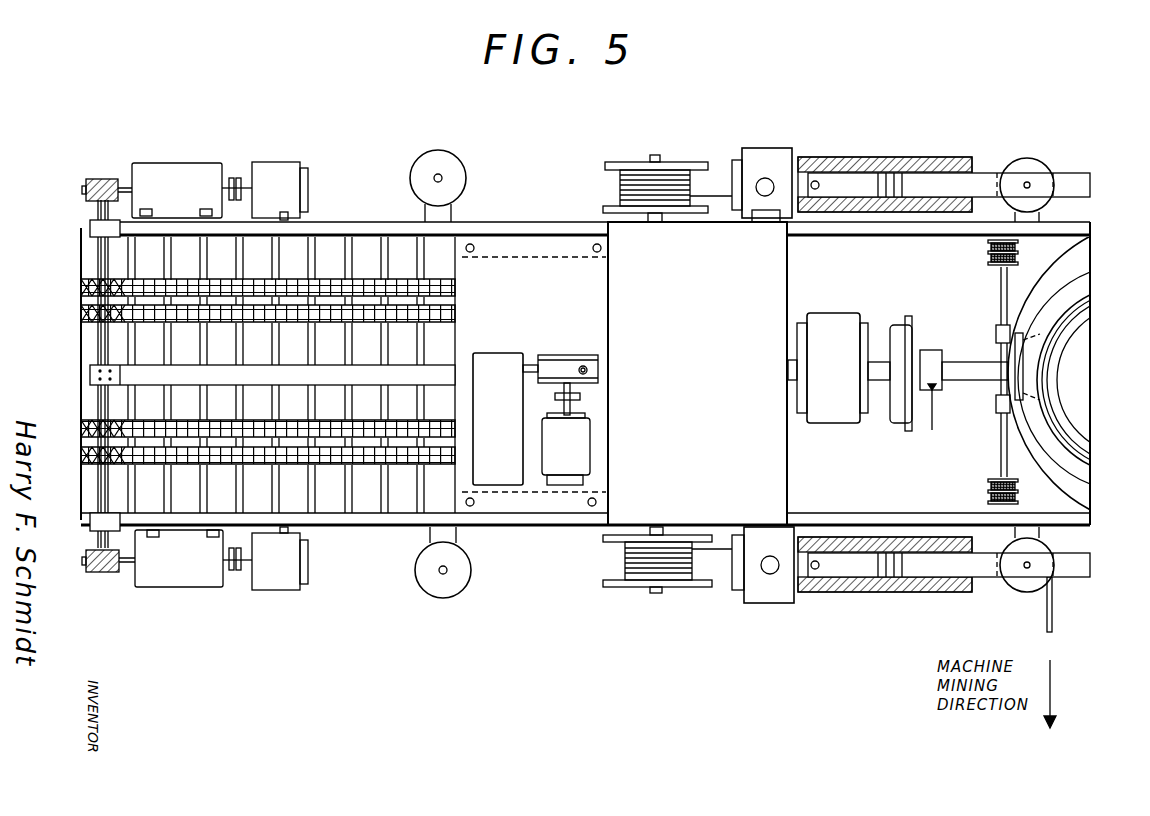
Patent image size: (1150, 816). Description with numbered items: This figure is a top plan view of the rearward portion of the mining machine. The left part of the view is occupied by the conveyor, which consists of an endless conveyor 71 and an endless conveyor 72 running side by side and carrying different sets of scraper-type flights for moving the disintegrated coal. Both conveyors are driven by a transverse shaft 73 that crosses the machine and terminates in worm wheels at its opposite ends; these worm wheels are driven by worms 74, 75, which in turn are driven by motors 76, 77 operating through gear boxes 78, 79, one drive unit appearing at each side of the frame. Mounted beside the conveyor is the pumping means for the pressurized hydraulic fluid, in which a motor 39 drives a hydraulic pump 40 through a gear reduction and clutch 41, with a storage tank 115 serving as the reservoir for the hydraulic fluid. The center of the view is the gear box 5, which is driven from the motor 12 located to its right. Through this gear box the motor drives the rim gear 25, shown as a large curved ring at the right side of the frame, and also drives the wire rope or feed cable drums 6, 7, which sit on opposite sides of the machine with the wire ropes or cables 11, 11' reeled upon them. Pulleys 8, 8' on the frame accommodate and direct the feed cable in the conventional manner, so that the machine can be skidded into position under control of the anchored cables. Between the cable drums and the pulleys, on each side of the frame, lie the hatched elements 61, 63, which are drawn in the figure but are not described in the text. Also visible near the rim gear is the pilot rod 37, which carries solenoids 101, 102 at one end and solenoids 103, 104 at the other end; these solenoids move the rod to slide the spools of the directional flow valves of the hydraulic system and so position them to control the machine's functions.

The gear box 5 is at (720, 348).
The feed cable drum 6 is at (617, 585).
The feed cable drum 7 is at (620, 162).
The pulley 8 is at (1031, 373).
The pulley 8' is at (447, 384).
The wire rope 11 is at (866, 599).
The wire rope 11' is at (697, 155).
The motor 12 is at (842, 320).
The rim gear 25 is at (1077, 288).
The pilot rod 37 is at (1002, 438).
The motor 39 is at (566, 449).
The hydraulic pump 40 is at (556, 360).
The gear reduction and clutch 41 is at (580, 397).
The lower hydraulic cylinder 61 is at (912, 592).
The upper hydraulic cylinder 63 is at (920, 172).
The endless conveyor 71 is at (80, 456).
The endless conveyor 72 is at (80, 317).
The transverse shaft 73 is at (96, 205).
The worm 74 is at (100, 567).
The worm 75 is at (100, 180).
The motor 76 is at (300, 575).
The motor 77 is at (278, 162).
The gear box 78 is at (182, 573).
The gear box 79 is at (162, 172).
The solenoid 101 is at (988, 246).
The solenoid 102 is at (988, 261).
The solenoid 103 is at (988, 484).
The solenoid 104 is at (990, 498).
The storage tank 115 is at (490, 363).